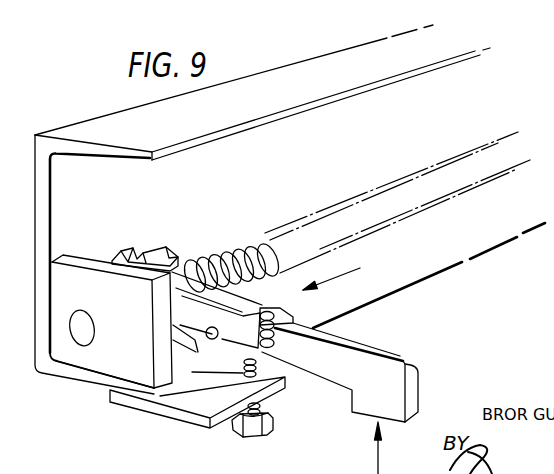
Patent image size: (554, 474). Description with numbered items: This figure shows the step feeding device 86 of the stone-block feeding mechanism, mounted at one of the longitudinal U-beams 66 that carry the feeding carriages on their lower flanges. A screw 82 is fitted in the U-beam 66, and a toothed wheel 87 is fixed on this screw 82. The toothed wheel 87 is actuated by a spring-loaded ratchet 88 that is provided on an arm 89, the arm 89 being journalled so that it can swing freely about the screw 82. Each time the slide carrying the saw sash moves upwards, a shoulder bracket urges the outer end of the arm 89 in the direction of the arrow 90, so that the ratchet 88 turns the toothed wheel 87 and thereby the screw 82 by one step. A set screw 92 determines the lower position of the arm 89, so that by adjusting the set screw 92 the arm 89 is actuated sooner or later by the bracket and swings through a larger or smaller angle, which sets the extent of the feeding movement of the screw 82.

The U-beam 66 is at (77, 147).
The toothed wheel 87 is at (146, 249).
The screw 82 is at (268, 238).
The step feeding device 86 is at (345, 264).
The spring-loaded ratchet 88 is at (200, 340).
The arm 89 is at (395, 384).
The arrow 90 is at (378, 463).
The set screw 92 is at (270, 425).